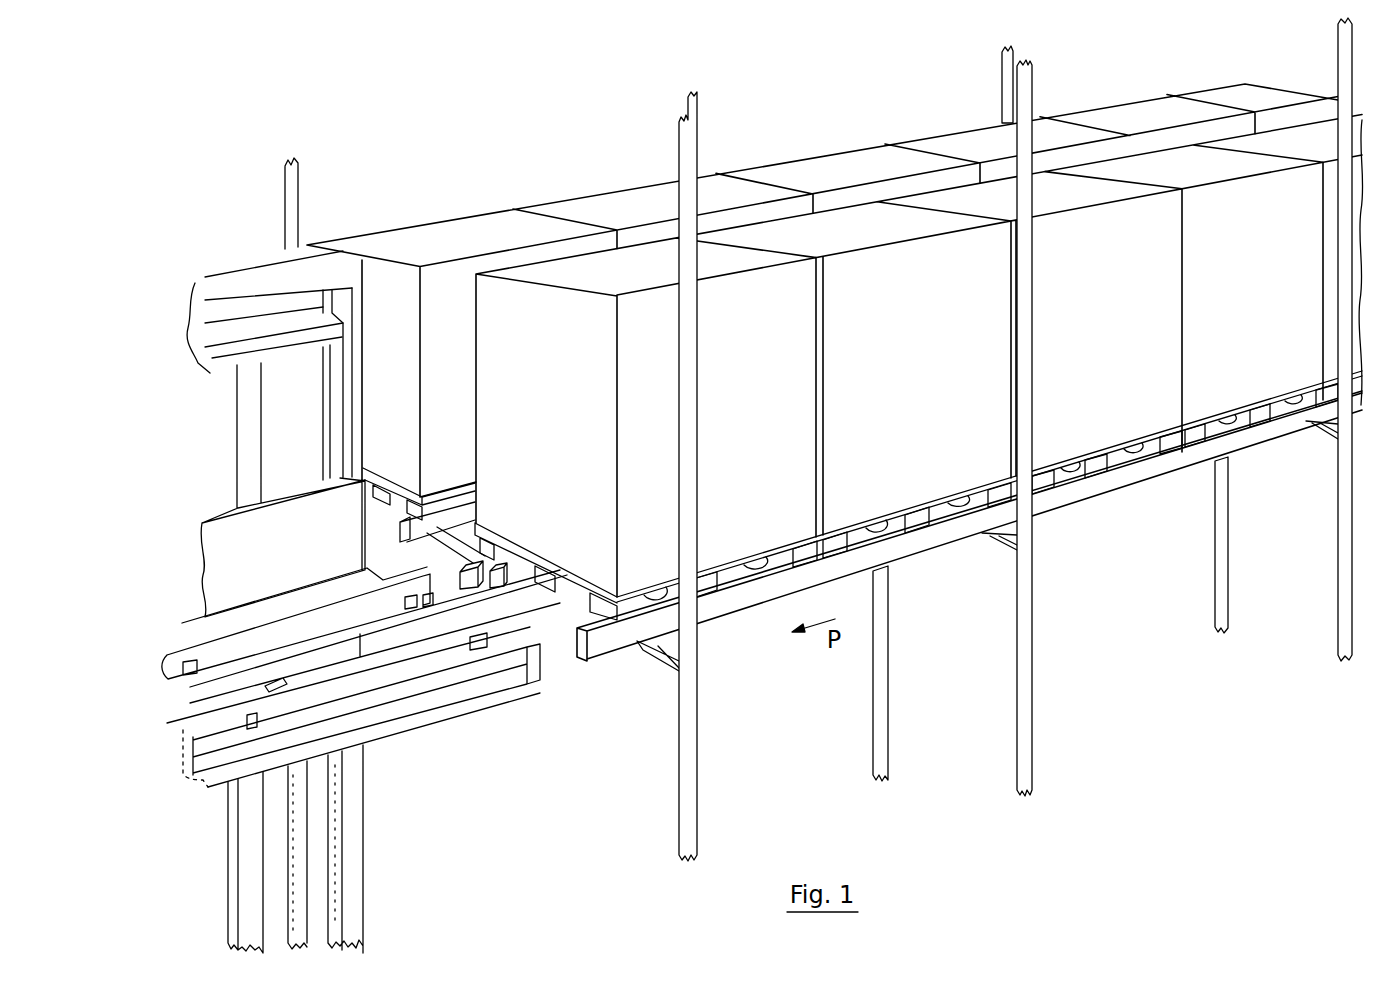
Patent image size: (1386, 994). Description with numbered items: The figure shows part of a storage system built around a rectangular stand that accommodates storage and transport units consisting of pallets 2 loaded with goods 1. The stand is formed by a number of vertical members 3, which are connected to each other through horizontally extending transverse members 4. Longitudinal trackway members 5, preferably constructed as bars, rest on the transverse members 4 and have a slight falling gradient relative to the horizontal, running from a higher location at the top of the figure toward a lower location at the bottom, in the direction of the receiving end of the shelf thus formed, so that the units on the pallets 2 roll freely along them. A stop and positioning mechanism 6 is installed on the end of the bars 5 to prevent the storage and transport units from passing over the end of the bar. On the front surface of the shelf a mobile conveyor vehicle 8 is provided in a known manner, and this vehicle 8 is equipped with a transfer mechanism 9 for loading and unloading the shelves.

The goods 1 is at (975, 139).
The pallets 2 is at (760, 570).
The vertical members 3 is at (1025, 616).
The transverse members 4 is at (655, 665).
The longitudinal trackway members 5 is at (1152, 470).
The stop and positioning mechanism 6 is at (458, 572).
The mobile conveyor vehicle 8 is at (230, 559).
The transfer mechanism 9 is at (540, 660).